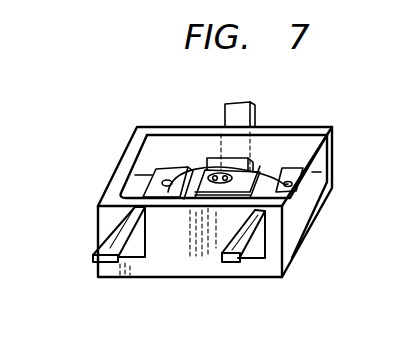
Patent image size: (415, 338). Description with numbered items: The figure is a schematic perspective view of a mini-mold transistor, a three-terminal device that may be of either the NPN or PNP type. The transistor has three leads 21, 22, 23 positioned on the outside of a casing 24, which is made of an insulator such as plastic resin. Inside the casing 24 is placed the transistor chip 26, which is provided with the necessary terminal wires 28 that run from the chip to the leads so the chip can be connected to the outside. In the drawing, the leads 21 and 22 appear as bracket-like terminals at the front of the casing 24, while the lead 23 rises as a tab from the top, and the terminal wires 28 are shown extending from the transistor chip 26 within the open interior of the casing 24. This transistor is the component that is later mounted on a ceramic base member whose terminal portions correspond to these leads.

The lead 21 is at (95, 259).
The lead 22 is at (229, 263).
The lead 23 is at (228, 108).
The casing 24 is at (185, 279).
The transistor chip 26 is at (272, 206).
The terminal wires 28 is at (250, 187).